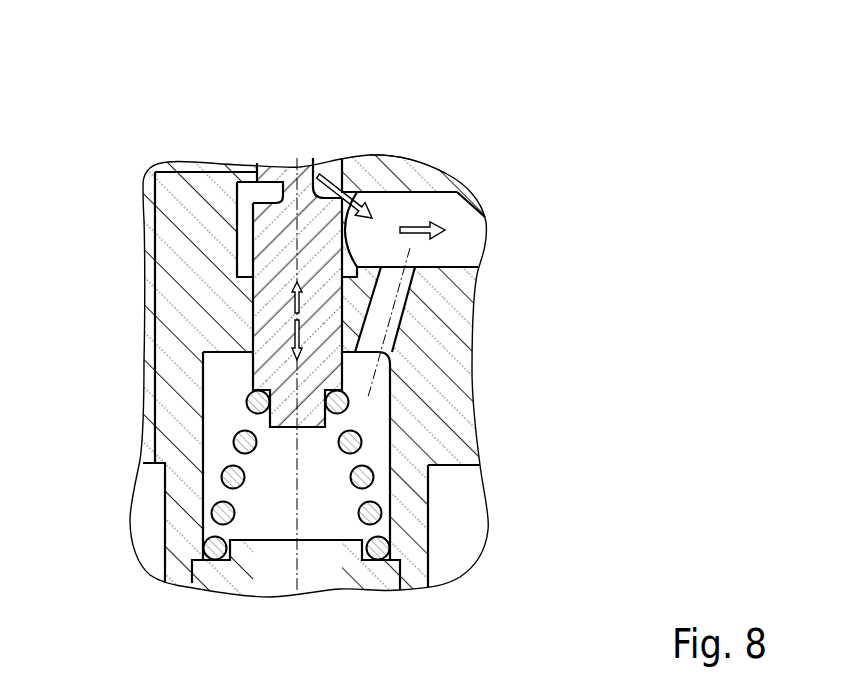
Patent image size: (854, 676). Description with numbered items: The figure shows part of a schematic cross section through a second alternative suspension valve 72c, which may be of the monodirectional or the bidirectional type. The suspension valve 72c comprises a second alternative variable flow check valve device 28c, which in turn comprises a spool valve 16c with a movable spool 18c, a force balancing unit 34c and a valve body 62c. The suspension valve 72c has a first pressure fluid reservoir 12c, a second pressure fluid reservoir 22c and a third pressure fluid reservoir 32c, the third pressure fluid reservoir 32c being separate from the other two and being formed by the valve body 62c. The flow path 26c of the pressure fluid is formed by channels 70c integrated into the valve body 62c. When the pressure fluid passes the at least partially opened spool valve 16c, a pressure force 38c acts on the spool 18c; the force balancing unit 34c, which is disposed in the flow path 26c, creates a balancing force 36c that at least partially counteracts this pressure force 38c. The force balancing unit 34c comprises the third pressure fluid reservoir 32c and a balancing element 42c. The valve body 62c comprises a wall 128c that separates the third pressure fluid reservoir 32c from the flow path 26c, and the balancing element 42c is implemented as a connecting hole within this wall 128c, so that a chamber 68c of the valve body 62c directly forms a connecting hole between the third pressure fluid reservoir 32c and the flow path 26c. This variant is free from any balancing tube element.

The first pressure fluid reservoir 12c is at (150, 560).
The spool valve 16c is at (254, 295).
The movable spool 18c is at (270, 228).
The second pressure fluid reservoir 22c is at (488, 93).
The flow path 26c is at (356, 150).
The second alternative variable flow check valve device 28c is at (449, 157).
The third pressure fluid reservoir 32c is at (273, 510).
The force balancing unit 34c is at (420, 281).
The balancing force 36c is at (290, 340).
The pressure force 38c is at (265, 322).
The balancing element 42c is at (402, 318).
The valve body 62c is at (420, 427).
The chamber 68c is at (409, 266).
The channels 70c is at (421, 211).
The second alternative suspension valve 72c is at (418, 148).
The wall 128c is at (362, 305).